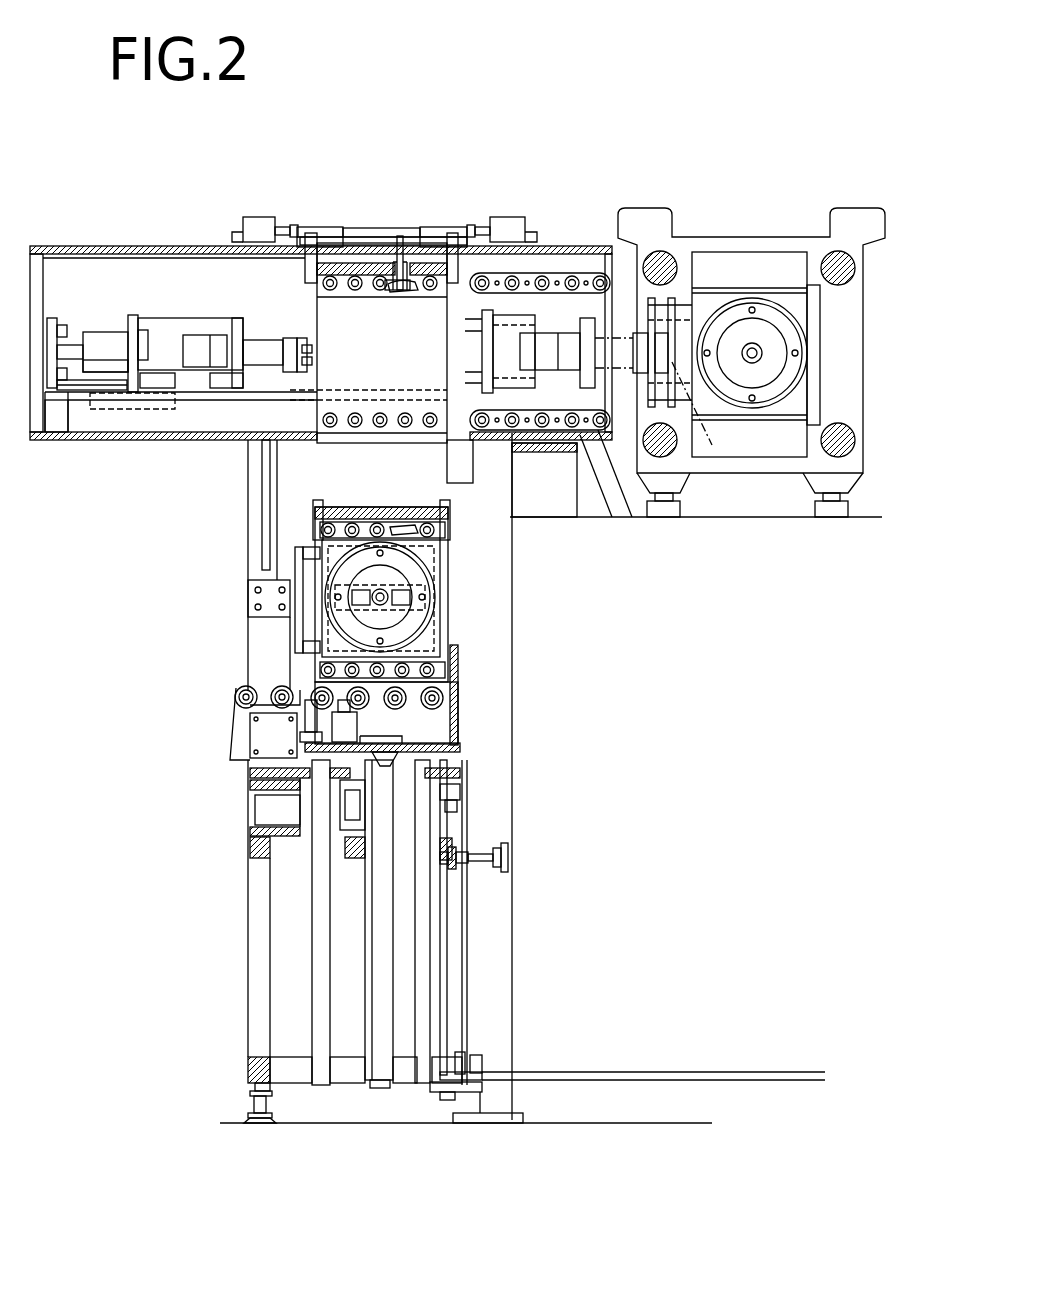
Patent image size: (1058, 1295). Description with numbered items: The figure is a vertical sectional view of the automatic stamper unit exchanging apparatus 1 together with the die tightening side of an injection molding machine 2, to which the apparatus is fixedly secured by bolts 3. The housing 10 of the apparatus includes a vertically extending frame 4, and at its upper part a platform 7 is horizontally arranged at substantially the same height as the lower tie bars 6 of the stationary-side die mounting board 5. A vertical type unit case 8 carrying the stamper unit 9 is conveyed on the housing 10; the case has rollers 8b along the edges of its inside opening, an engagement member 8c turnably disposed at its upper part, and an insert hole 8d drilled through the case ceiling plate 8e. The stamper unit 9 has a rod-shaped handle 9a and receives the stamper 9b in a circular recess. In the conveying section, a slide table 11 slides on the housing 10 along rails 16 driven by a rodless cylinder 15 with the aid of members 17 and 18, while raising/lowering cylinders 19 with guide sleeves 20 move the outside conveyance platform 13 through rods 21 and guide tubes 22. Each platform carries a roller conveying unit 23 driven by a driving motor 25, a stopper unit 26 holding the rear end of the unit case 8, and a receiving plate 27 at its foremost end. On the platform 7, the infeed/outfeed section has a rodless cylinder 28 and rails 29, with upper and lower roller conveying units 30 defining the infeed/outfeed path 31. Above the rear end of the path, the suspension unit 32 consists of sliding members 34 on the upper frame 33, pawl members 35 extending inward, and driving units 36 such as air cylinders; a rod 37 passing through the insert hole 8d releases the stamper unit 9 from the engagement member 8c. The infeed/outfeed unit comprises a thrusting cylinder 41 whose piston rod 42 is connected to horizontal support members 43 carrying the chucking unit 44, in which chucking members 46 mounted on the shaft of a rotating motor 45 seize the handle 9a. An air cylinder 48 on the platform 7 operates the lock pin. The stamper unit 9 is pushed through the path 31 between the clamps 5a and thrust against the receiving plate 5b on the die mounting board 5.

The automatic stamper unit exchanging apparatus 1 is at (234, 590).
The injection molding machine 2 is at (680, 733).
The bolts 3 is at (478, 860).
The frame 4 is at (258, 530).
The die mounting board 5 is at (813, 247).
The clamps 5a is at (748, 267).
The receiving plate 5b is at (818, 337).
The lower tie bars 6 is at (842, 443).
The platform 7 is at (200, 441).
The unit case 8 is at (296, 393).
The rollers 8b is at (352, 522).
The engagement member 8c is at (395, 290).
The insert hole 8d is at (400, 280).
The case ceiling plate 8e is at (352, 270).
The stamper unit 9 is at (800, 308).
The rod-shaped handle 9a is at (672, 313).
The stamper 9b is at (772, 367).
The housing 10 is at (246, 923).
The slide table 11 is at (252, 773).
The outside conveyance platform 13 is at (233, 718).
The rodless cylinder 15 is at (250, 812).
The rails 16 is at (462, 793).
The member 17 is at (248, 788).
The member 18 is at (462, 775).
The raising/lowering cylinders 19 is at (378, 905).
The guide sleeves 20 is at (316, 840).
The rods 21 is at (382, 743).
The guide tubes 22 is at (320, 978).
The roller conveying unit 23 is at (250, 690).
The driving motor 25 is at (253, 735).
The stopper unit 26 is at (307, 710).
The receiving plate 27 is at (458, 688).
The rodless cylinder 28 is at (55, 427).
The rails 29 is at (182, 394).
The roller conveying units 30 is at (556, 278).
The infeed/outfeed path 31 is at (590, 300).
The suspension unit 32 is at (338, 217).
The upper frame 33 is at (268, 247).
The sliding members 34 is at (322, 228).
The pawl members 35 is at (322, 283).
The driving units 36 is at (258, 228).
The rod 37 is at (390, 262).
The thrusting cylinder 41 is at (102, 345).
The piston rod 42 is at (78, 345).
The support members 43 is at (118, 330).
The chucking unit 44 is at (258, 340).
The rotating motor 45 is at (205, 340).
The chucking members 46 is at (336, 312).
The air cylinder 48 is at (465, 460).